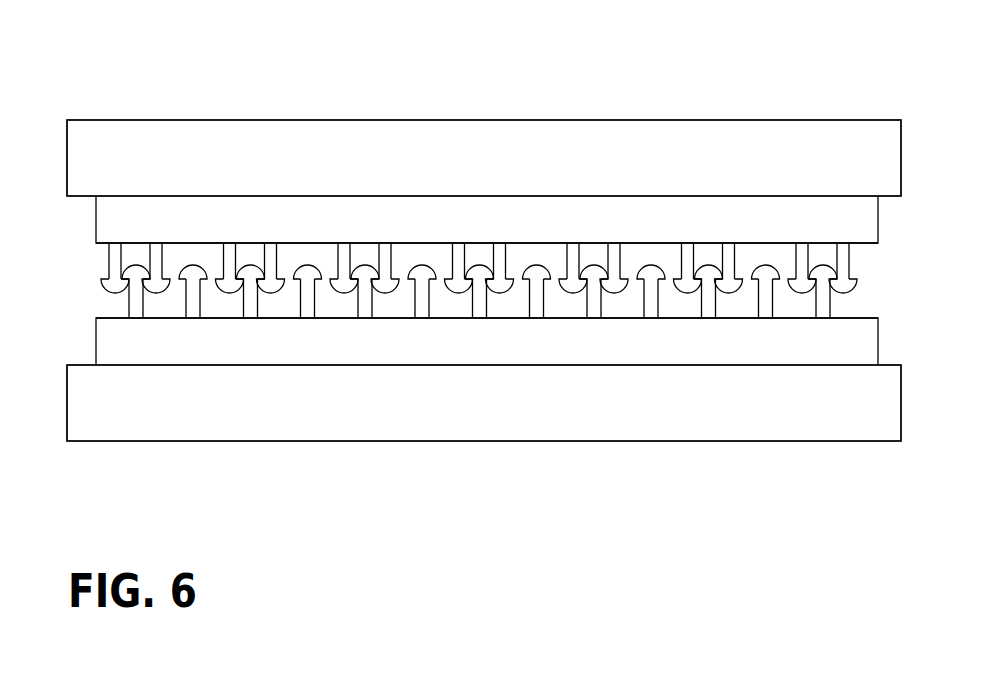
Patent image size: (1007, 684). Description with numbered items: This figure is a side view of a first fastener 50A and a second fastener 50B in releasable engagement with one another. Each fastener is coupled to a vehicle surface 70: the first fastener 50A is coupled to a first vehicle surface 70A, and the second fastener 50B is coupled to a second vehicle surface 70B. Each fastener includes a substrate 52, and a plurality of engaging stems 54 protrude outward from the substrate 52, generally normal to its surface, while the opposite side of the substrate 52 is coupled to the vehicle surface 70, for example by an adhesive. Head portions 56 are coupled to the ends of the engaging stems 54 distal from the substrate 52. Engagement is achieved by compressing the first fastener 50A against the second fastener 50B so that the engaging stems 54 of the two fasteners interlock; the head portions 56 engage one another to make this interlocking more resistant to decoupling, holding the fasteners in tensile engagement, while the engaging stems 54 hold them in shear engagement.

The vehicle surfaces 70 is at (424, 163).
The first vehicle surface 70A is at (573, 364).
The second vehicle surface 70B is at (507, 195).
The first fastener 50A is at (428, 346).
The second fastener 50B is at (428, 228).
The substrate 52 is at (115, 318).
The engaging stems 54 is at (233, 260).
The head portions 56 is at (113, 290).